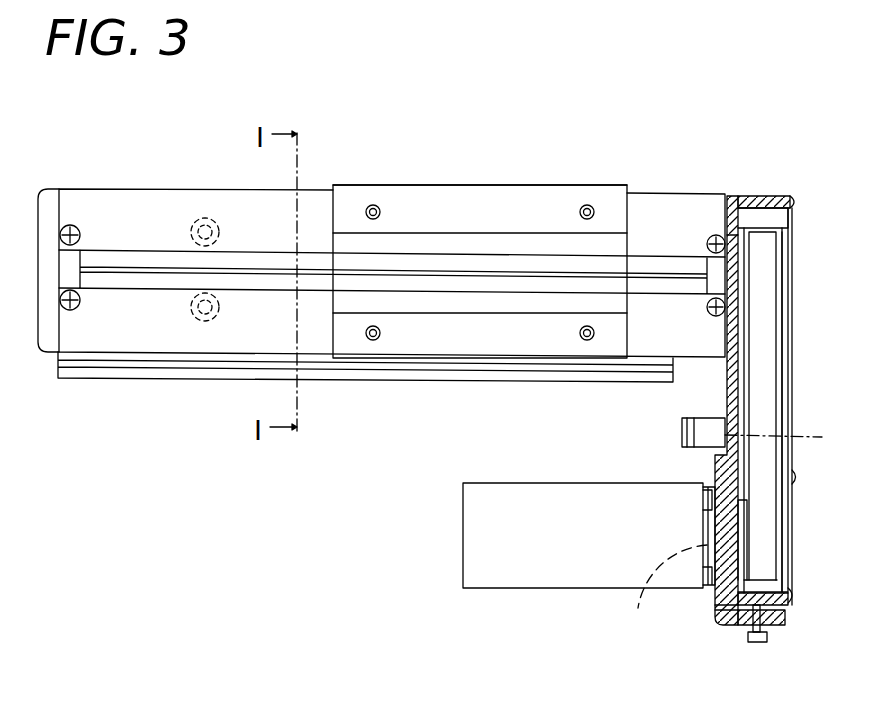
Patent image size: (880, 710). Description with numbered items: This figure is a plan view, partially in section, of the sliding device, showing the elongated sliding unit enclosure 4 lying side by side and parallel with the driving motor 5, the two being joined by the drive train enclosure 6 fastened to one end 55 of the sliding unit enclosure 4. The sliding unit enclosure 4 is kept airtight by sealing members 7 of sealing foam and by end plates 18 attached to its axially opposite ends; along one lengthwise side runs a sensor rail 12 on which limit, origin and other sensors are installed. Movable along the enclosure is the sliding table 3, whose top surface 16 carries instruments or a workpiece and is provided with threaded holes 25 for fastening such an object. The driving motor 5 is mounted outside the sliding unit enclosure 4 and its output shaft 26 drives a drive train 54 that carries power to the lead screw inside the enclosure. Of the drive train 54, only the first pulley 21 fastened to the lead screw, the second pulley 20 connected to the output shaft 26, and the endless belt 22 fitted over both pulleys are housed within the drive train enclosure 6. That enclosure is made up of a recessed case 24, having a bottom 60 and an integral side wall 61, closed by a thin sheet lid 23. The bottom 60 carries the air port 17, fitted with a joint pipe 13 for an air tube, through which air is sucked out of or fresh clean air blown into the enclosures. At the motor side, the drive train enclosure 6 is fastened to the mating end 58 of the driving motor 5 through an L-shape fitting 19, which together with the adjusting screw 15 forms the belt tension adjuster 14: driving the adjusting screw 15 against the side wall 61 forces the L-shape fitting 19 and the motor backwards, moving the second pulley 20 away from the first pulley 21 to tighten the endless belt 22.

The sliding table 3 is at (490, 208).
The sliding unit enclosure 4 is at (181, 210).
The driving motor 5 is at (492, 536).
The drive train enclosure 6 is at (797, 192).
The sealing members 7 is at (133, 262).
The sensor rail 12 is at (160, 372).
The joint pipe 13 is at (690, 430).
The belt tension adjuster 14 is at (733, 636).
The adjusting screw 15 is at (768, 637).
The top surface 16 is at (421, 207).
The air port 17 is at (790, 437).
The end plates 18 is at (48, 335).
The L-shape fitting 19 is at (716, 618).
The second pulley 20 is at (778, 553).
The first pulley 21 is at (782, 272).
The endless belt 22 is at (768, 398).
The lid 23 is at (795, 222).
The case 24 is at (762, 200).
The threaded holes 25 is at (588, 210).
The output shaft 26 is at (661, 589).
The drive train 54 is at (777, 346).
The end 55 is at (734, 210).
The mating end 58 is at (732, 523).
The bottom 60 is at (727, 232).
The side wall 61 is at (777, 203).